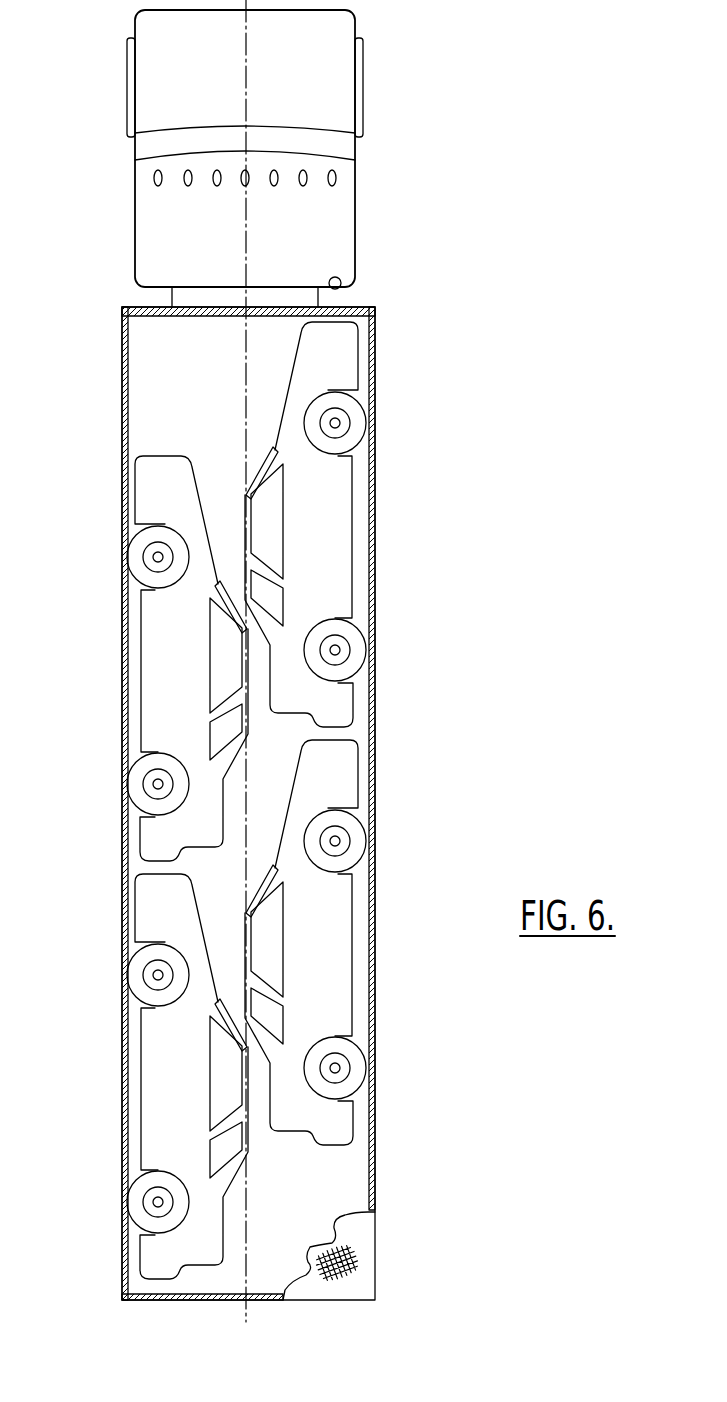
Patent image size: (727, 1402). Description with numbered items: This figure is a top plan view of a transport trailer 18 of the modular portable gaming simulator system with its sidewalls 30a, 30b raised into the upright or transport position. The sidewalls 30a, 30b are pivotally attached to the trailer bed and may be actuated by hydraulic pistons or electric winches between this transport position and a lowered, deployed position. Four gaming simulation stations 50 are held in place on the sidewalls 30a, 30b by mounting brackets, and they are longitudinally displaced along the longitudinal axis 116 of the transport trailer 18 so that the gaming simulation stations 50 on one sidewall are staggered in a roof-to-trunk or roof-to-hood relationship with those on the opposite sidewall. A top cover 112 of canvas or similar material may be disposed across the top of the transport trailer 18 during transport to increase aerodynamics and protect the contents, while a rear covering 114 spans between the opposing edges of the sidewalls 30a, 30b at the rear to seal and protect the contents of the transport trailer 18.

The transport trailer 18 is at (241, 828).
The sidewall 30a is at (376, 481).
The sidewall 30b is at (121, 533).
The gaming simulation station 50 is at (246, 800).
The top cover 112 is at (365, 1272).
The rear covering 114 is at (176, 1300).
The longitudinal axis 116 is at (244, 243).